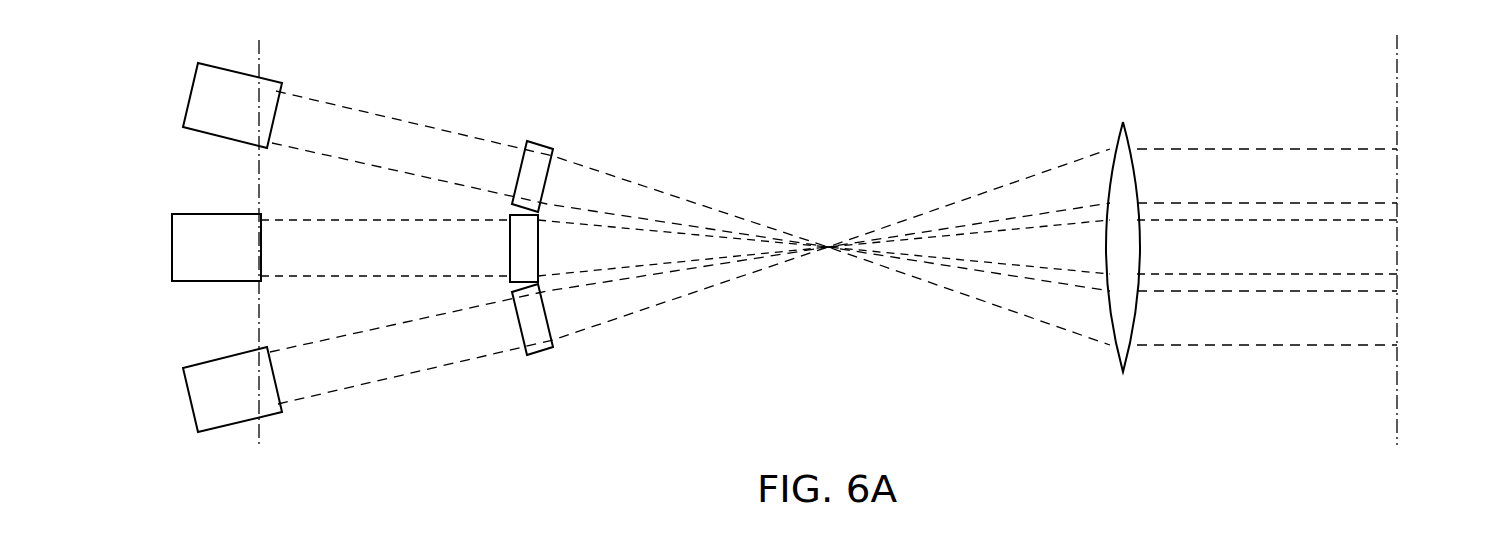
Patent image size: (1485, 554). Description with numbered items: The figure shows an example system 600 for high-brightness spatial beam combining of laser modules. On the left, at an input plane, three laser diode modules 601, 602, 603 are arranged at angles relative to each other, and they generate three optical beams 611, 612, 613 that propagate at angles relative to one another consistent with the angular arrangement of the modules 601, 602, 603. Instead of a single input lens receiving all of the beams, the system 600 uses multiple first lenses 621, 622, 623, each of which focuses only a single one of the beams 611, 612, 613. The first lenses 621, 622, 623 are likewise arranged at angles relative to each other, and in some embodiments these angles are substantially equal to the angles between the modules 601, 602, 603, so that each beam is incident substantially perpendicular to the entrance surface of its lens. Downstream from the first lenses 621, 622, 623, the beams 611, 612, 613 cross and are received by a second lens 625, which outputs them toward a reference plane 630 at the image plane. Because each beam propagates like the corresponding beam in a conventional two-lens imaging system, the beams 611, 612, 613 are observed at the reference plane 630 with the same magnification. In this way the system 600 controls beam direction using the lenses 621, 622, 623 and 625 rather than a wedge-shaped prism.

The system 600 is at (671, 101).
The laser diode module 601 is at (190, 96).
The laser diode module 602 is at (172, 247).
The laser diode module 603 is at (190, 400).
The optical beam 611 is at (392, 117).
The optical beam 612 is at (320, 218).
The optical beam 613 is at (392, 379).
The first lens 621 is at (541, 146).
The first lens 622 is at (527, 247).
The first lens 623 is at (541, 356).
The second lens 625 is at (1124, 122).
The reference plane 630 is at (1398, 95).